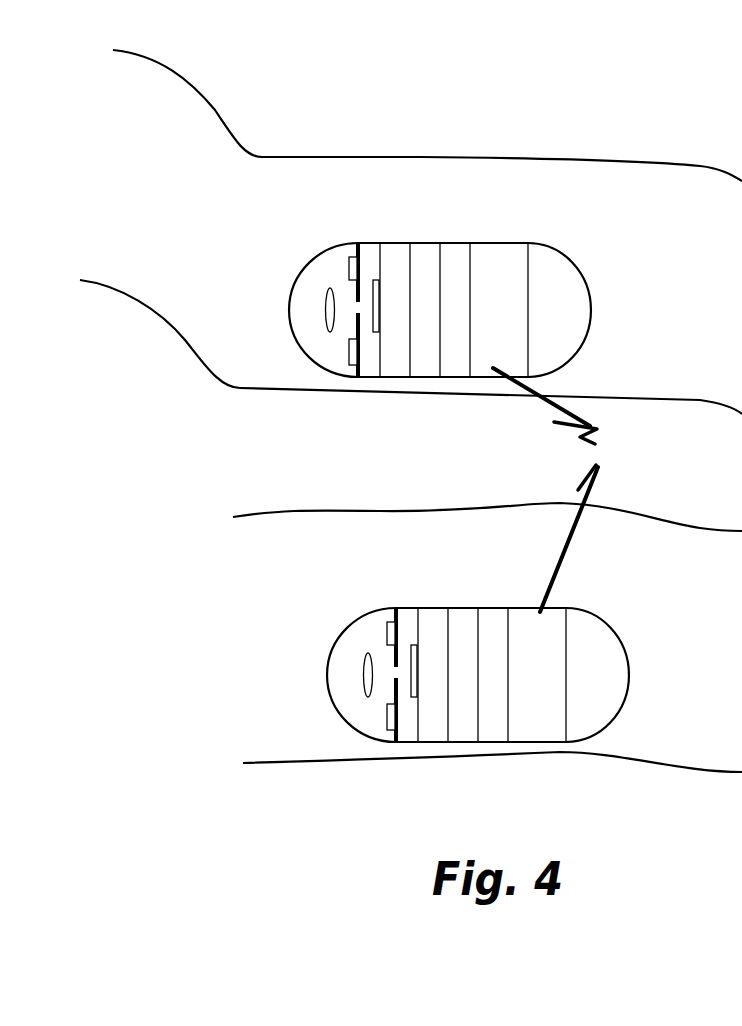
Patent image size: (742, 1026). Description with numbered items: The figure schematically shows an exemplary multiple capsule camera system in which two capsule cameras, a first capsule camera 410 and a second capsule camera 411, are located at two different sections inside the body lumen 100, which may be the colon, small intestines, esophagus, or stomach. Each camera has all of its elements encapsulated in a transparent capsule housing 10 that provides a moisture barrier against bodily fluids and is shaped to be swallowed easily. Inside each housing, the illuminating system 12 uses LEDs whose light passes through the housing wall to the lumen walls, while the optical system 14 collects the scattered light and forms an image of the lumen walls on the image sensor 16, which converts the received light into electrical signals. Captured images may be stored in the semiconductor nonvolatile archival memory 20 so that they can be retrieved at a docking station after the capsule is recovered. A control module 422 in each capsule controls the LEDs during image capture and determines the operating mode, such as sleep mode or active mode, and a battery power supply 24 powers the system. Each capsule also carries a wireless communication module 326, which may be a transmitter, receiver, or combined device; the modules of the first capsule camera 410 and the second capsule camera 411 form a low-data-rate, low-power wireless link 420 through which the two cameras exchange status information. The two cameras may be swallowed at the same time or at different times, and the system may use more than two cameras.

The capsule housing 10 is at (493, 478).
The illuminating system 12 is at (349, 270).
The optical system 14 is at (328, 315).
The image sensor 16 is at (375, 280).
The archival memory 20 is at (393, 252).
The control module 422 is at (430, 253).
The battery power supply 24 is at (458, 255).
The wireless communication module 326 is at (485, 245).
The second capsule camera 411 is at (597, 282).
The first capsule camera 410 is at (637, 652).
The wireless link 420 is at (593, 490).
The body lumen 100 is at (185, 347).